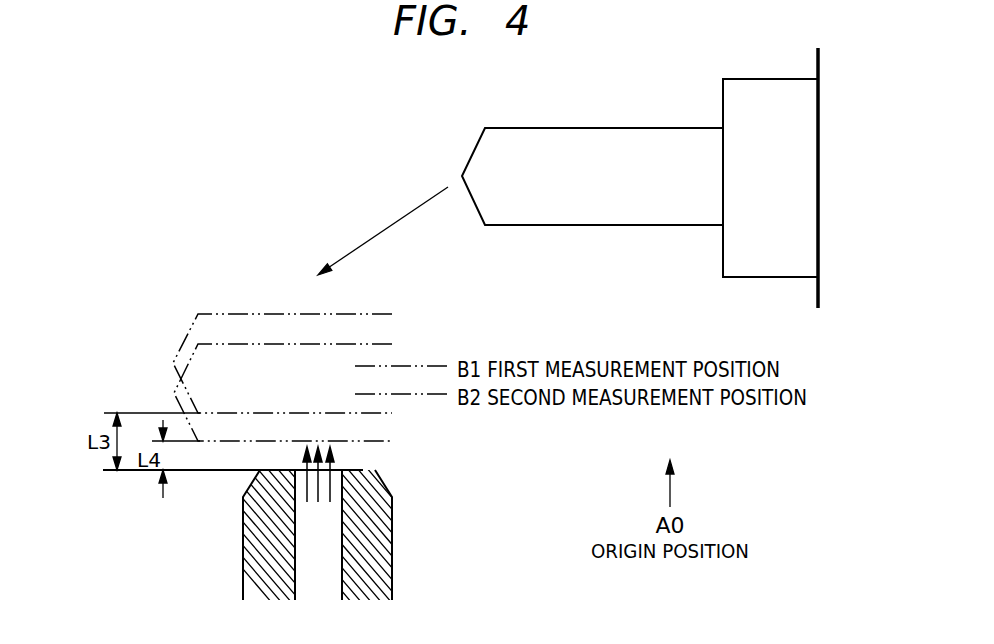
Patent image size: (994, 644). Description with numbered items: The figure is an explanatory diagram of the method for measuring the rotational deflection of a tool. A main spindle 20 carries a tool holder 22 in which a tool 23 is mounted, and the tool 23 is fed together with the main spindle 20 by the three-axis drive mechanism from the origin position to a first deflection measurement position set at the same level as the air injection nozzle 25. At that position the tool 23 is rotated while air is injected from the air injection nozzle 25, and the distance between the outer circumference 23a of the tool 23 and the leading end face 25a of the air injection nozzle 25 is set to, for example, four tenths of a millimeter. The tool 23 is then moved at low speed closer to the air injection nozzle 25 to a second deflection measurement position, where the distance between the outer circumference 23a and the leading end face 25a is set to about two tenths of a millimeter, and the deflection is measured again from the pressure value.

The main spindle 20 is at (822, 283).
The tool holder 22 is at (752, 85).
The tool 23 is at (579, 135).
The outer circumference 23a is at (581, 228).
The air injection nozzle 25 is at (382, 573).
The leading end face 25a is at (363, 470).